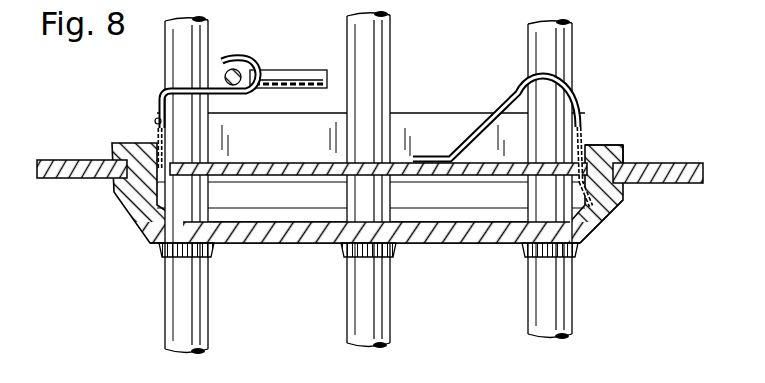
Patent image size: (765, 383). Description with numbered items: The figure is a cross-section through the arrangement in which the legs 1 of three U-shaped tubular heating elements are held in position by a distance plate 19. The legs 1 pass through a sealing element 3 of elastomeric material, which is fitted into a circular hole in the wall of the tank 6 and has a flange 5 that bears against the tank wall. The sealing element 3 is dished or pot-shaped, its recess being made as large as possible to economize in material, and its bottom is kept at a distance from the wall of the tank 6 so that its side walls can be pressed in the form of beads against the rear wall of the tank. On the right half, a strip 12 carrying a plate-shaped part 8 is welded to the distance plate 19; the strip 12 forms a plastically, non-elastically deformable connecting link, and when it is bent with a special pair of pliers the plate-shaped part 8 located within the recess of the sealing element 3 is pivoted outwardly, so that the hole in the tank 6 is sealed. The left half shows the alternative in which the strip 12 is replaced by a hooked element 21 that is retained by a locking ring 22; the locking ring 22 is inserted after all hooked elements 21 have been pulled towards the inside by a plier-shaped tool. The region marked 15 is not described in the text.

The legs 1 is at (200, 38).
The sealing element 3 is at (590, 233).
The flange 5 is at (625, 150).
The tank 6 is at (685, 183).
The plate-shaped parts 8 is at (587, 132).
The strip 12 is at (518, 97).
The bevelled flange 15 is at (612, 197).
The distance plate 19 is at (293, 167).
The hooked elements 21 is at (187, 90).
The locking ring 22 is at (293, 75).